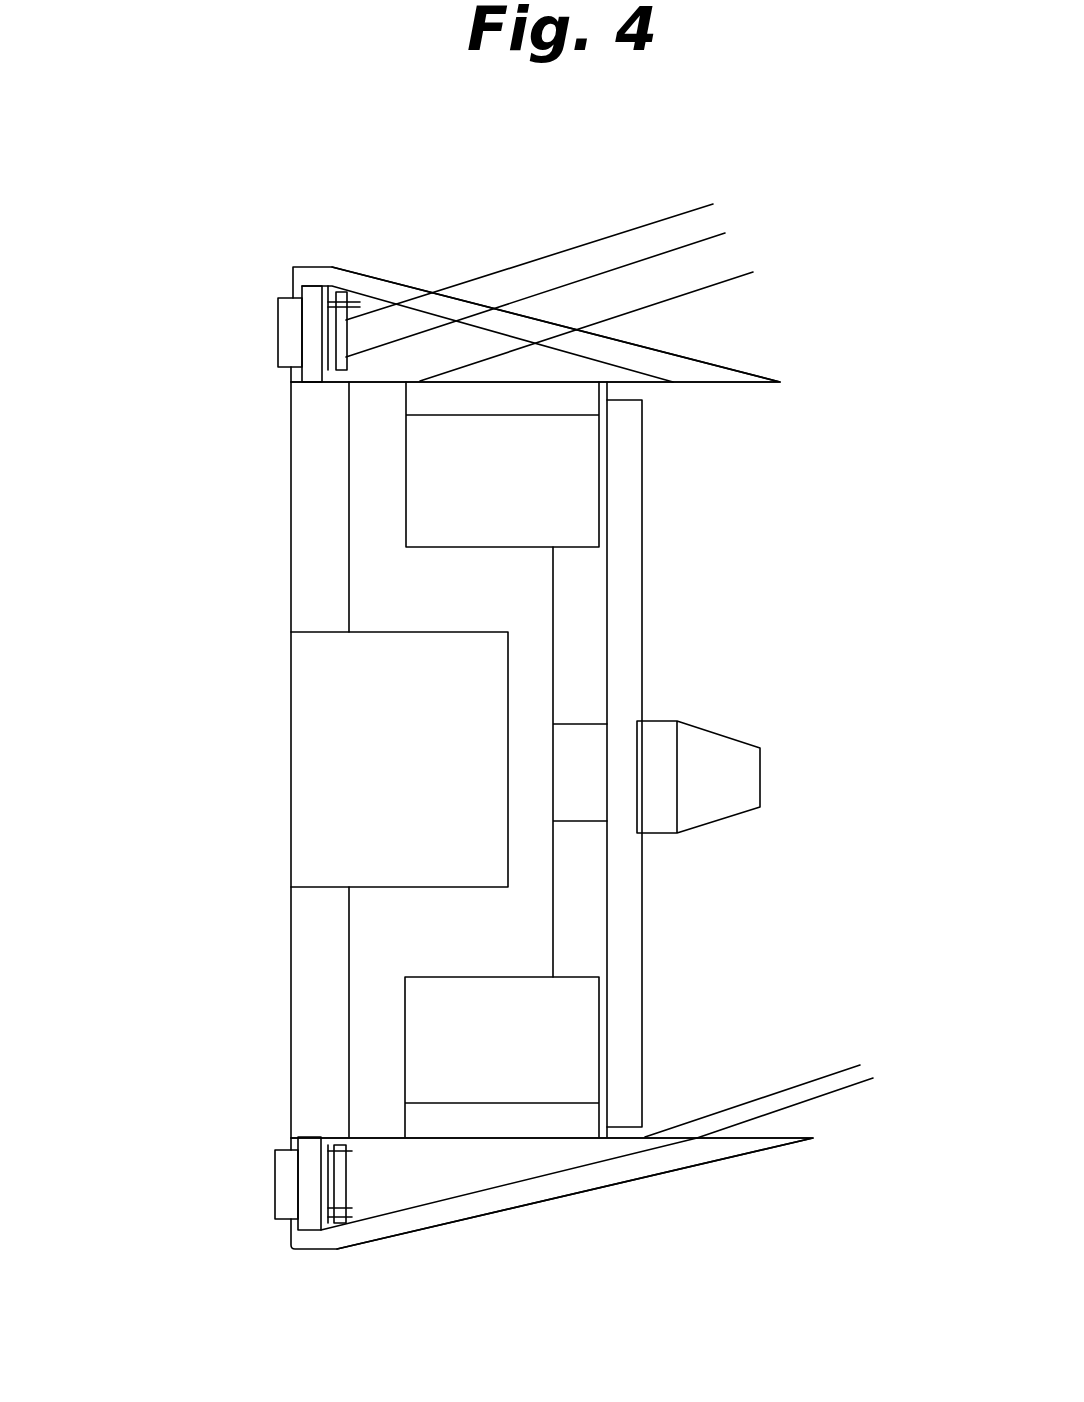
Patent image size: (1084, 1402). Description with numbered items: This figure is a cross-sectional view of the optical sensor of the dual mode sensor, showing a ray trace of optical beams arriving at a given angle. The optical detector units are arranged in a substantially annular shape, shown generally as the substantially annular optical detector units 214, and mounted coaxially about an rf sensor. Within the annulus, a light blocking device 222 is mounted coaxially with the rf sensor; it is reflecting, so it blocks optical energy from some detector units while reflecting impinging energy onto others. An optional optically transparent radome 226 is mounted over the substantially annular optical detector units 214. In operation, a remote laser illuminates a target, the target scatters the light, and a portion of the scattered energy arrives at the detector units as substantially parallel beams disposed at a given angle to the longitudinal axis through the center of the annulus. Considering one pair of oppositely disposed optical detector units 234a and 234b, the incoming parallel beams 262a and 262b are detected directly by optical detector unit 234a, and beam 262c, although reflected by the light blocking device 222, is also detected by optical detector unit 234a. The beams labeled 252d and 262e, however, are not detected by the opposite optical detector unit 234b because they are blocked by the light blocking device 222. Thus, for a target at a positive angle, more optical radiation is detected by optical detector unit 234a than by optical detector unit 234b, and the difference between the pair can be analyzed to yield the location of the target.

The substantially annular optical detector units 214 is at (256, 312).
The optical detector unit 234a is at (293, 299).
The optical detector unit 234b is at (289, 1236).
The light blocking device 222 is at (542, 381).
The optically transparent radome 226 is at (702, 362).
The beam of optical energy 262a is at (652, 223).
The beam of optical energy 262b is at (531, 300).
The beam of optical energy 262c is at (727, 280).
The strut 252d is at (797, 1084).
The beam of optical energy 262e is at (830, 1094).